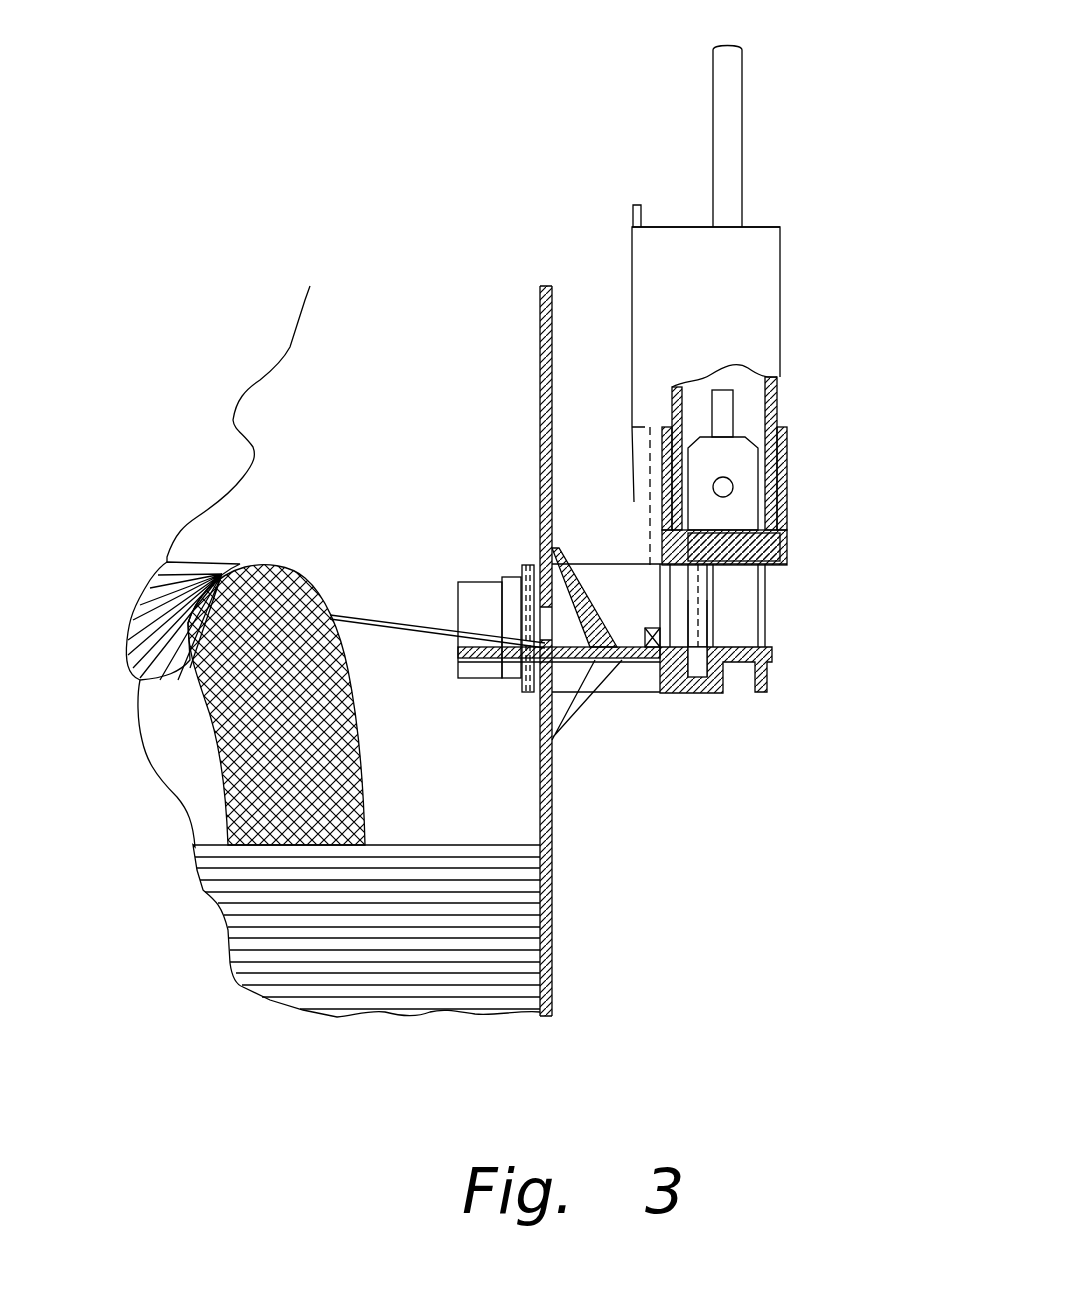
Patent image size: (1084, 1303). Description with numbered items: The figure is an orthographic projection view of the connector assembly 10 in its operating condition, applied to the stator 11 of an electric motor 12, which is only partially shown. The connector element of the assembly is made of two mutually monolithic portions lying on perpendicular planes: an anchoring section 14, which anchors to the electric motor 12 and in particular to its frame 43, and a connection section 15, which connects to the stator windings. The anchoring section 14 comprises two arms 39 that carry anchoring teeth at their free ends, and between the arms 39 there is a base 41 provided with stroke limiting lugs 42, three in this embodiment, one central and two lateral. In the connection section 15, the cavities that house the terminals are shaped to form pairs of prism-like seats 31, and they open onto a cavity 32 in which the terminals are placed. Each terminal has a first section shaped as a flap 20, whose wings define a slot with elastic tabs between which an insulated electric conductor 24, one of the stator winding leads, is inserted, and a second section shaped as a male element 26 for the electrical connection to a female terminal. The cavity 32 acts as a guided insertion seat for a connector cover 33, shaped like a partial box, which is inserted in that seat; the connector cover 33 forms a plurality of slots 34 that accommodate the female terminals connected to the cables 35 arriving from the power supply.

The connector assembly 10 is at (602, 248).
The stator 11 is at (562, 827).
The electric motor 12 is at (137, 572).
The anchoring section 14 is at (645, 700).
The connection section 15 is at (800, 475).
The flap 20 is at (710, 627).
The electric conductor 24 is at (532, 697).
The male element 26 is at (732, 457).
The prism-like seats 31 is at (692, 612).
The cavity 32 is at (760, 505).
The connector cover 33 is at (680, 253).
The slots 34 is at (742, 380).
The cables 35 is at (736, 137).
The arms 39 is at (460, 597).
The base 41 is at (523, 637).
The stroke limiting lugs 42 is at (555, 552).
The frame 43 is at (553, 977).